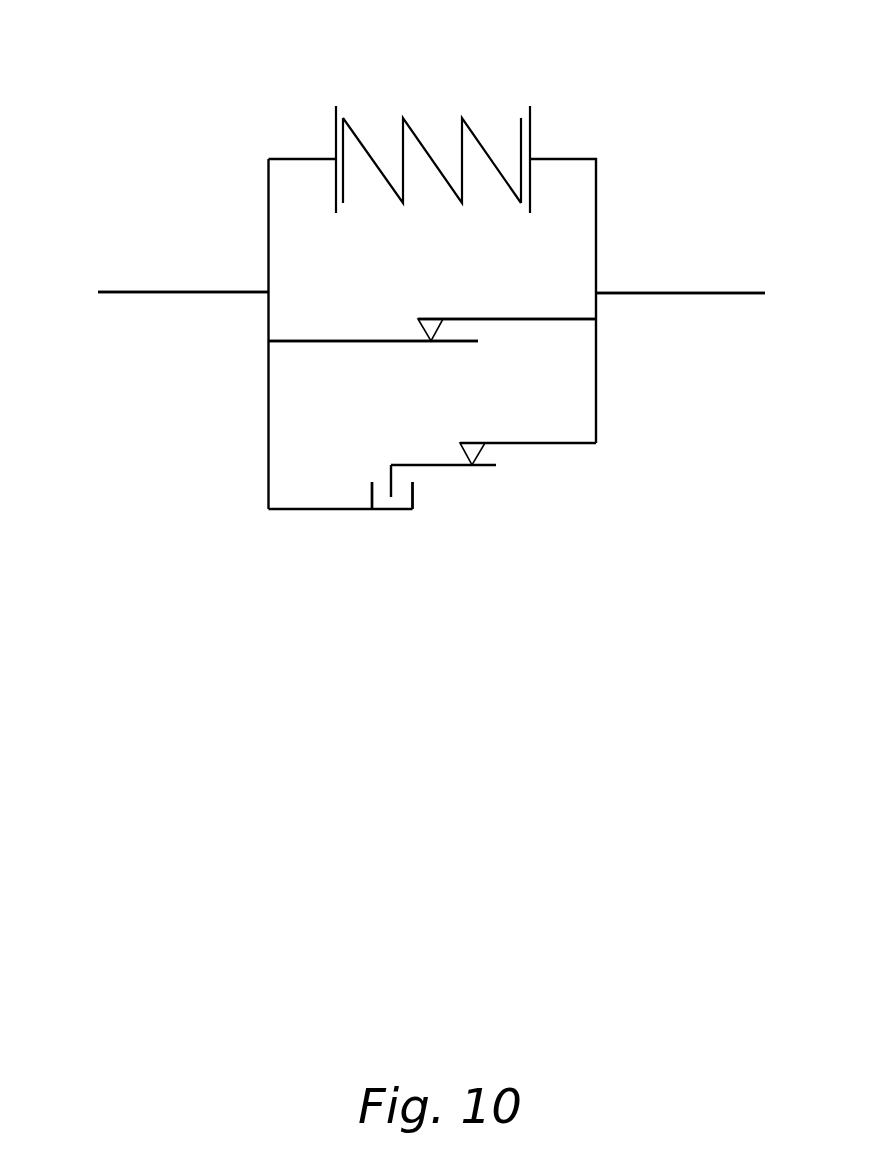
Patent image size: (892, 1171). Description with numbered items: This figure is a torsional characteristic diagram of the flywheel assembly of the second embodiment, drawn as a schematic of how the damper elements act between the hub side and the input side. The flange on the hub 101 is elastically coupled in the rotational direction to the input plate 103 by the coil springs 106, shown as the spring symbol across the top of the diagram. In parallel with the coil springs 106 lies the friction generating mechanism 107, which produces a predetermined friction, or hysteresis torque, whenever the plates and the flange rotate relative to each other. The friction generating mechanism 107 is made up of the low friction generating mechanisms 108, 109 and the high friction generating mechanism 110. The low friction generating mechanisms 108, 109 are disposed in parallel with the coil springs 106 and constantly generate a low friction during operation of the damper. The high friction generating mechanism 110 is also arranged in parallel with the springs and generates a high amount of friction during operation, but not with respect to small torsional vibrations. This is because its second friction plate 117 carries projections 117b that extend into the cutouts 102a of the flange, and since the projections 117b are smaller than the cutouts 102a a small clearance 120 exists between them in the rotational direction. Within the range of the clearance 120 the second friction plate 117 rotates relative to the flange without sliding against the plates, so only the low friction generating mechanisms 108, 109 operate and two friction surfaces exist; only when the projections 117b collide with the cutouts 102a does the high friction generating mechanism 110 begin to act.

The hub 101 is at (155, 291).
The cutouts 102a is at (410, 500).
The plate 103 is at (671, 292).
The coil springs 106 is at (420, 146).
The friction generating mechanism 107 is at (235, 405).
The low friction generating mechanism 108 is at (431, 311).
The low friction generating mechanism 109 is at (433, 330).
The high friction generating mechanism 110 is at (440, 557).
The second friction plate 117 is at (418, 460).
The projections 117b is at (383, 470).
The clearance 120 is at (378, 493).